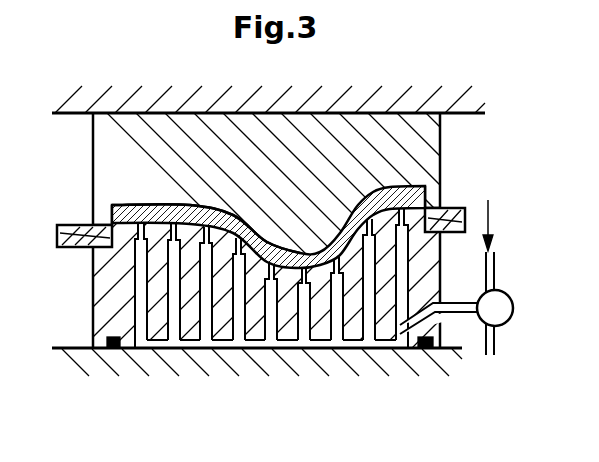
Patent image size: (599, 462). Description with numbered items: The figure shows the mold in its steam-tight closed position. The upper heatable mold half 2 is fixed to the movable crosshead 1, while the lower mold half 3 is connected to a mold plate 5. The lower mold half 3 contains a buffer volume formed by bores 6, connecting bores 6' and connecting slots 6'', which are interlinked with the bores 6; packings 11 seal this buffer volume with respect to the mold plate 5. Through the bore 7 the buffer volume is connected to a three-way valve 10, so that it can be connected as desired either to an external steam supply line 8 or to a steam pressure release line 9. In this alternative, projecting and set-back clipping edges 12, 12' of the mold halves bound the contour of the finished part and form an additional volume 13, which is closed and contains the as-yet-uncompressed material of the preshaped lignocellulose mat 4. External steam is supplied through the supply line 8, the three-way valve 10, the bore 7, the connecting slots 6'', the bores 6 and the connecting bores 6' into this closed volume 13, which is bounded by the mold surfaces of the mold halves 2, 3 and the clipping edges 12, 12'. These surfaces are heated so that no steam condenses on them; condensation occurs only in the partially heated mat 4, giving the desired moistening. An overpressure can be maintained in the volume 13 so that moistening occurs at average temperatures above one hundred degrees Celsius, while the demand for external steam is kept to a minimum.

The movable crosshead 1 is at (70, 100).
The upper heatable mold half 2 is at (99, 149).
The lower mold half 3 is at (100, 308).
The preshaped lignocellulose mat 4 is at (72, 247).
The mold plate 5 is at (82, 365).
The bores 6 is at (271, 319).
The connecting bores 6' is at (167, 317).
The connecting slots 6'' is at (342, 320).
The bore 7 is at (460, 303).
The external steam supply line 8 is at (490, 268).
The steam pressure release line 9 is at (493, 338).
The three-way valve 10 is at (508, 305).
The packings 11 is at (113, 352).
The projecting clipping edge 12 is at (256, 208).
The set-back clipping edge 12' is at (465, 204).
The additional volume 13 is at (115, 205).